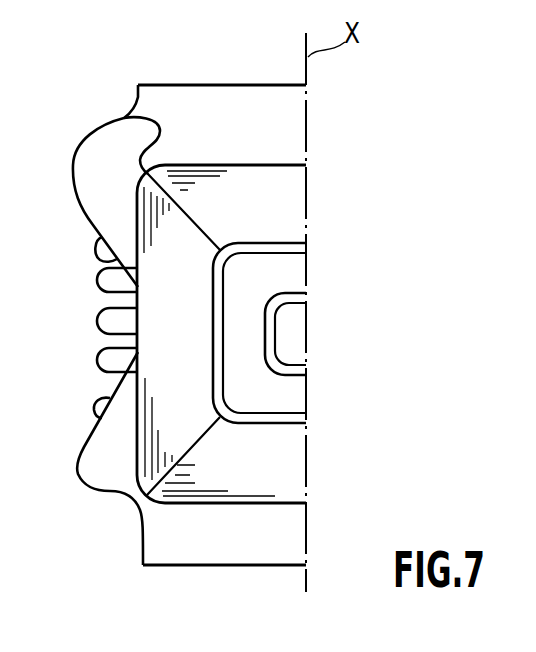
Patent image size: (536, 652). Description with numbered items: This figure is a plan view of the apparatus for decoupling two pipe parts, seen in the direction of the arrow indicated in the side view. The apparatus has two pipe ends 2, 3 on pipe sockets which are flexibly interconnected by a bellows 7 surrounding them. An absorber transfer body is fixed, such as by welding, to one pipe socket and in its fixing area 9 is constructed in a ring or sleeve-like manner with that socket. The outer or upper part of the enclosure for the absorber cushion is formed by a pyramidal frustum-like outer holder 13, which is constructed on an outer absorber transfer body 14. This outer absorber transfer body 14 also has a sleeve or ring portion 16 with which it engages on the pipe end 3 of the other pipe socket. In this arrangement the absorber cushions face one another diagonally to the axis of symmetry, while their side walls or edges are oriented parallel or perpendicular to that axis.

The pipe end 2 is at (180, 566).
The pipe end 3 is at (200, 85).
The bellows 7 is at (97, 326).
The fixing area 9 is at (143, 529).
The outer holder 13 is at (161, 383).
The outer absorber transfer body 14 is at (124, 225).
The sleeve or ring portion 16 is at (138, 96).